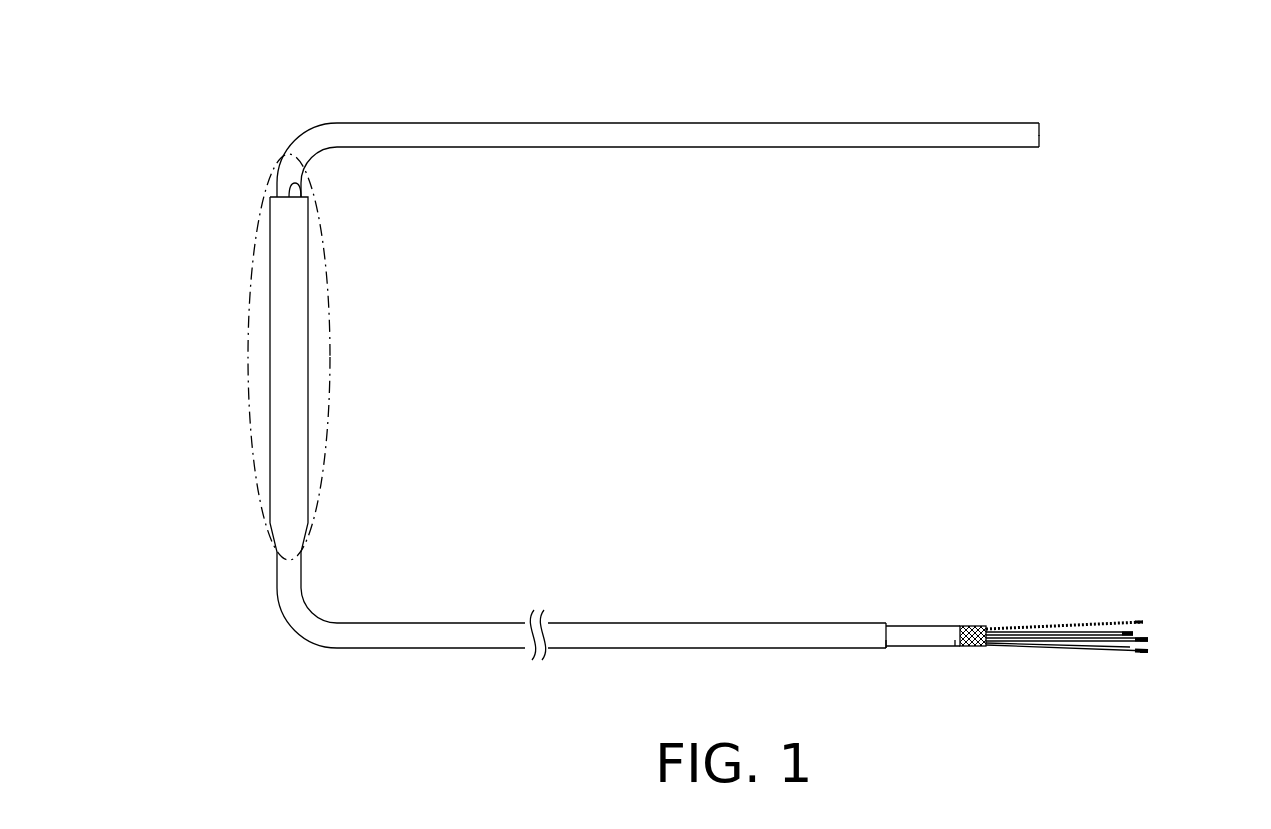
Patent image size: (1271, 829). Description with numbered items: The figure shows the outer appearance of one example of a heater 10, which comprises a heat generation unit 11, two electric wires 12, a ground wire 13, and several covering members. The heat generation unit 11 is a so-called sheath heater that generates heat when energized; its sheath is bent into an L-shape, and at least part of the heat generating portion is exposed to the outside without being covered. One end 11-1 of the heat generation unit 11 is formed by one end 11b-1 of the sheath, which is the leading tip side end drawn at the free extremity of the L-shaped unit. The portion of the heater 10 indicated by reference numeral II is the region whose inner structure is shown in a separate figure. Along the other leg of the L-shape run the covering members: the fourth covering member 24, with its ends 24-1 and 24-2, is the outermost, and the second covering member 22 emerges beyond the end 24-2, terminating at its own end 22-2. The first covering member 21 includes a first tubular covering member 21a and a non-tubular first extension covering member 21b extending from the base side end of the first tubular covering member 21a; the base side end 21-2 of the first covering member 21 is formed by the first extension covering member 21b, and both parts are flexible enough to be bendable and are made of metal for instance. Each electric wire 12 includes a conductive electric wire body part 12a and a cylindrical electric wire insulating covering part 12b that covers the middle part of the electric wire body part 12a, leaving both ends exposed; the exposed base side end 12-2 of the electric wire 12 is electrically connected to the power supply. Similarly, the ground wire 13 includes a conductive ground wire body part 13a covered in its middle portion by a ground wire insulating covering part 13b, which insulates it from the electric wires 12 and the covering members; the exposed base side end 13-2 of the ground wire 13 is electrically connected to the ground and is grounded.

The heater 10 is at (1147, 88).
The heat generation unit 11 is at (840, 132).
The one end of sheath 11b-1 is at (1040, 135).
The one end of heat generation unit 11-1 is at (1192, 136).
The end of fourth covering member 24-1 is at (301, 187).
The portion of heater II is at (329, 333).
The fourth covering member 24 is at (703, 637).
The end of fourth covering member 24-2 is at (890, 648).
The second covering member 22 is at (915, 635).
The end of second covering member 22-2 is at (955, 646).
The first covering member 21 is at (1041, 575).
The first tubular covering member 21a is at (972, 628).
The first extension covering member 21b is at (1022, 627).
The base side end of first covering member 21-2 is at (1148, 624).
The electric wire 12 is at (1081, 581).
The electric wire body part 12a is at (1147, 636).
The electric wire insulating covering part 12b is at (1086, 633).
The base side end of electric wire 12-2 is at (1152, 639).
The ground wire 13 is at (1076, 708).
The ground wire body part 13a is at (1137, 653).
The ground wire insulating covering part 13b is at (1057, 650).
The base side end of ground wire 13-2 is at (1150, 650).